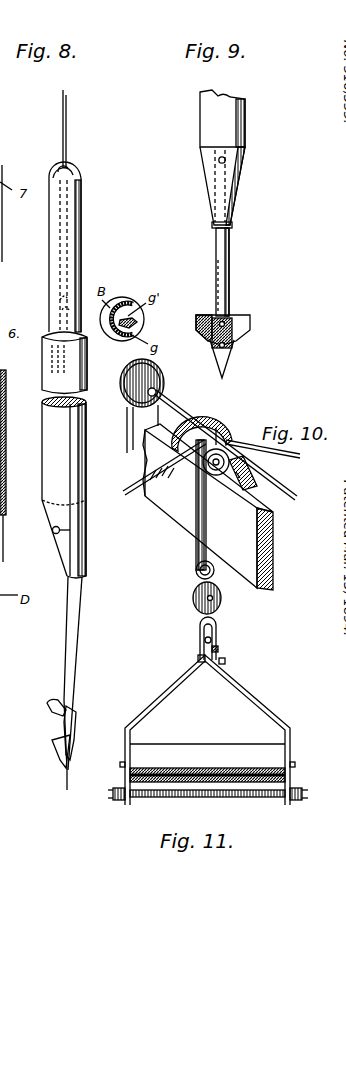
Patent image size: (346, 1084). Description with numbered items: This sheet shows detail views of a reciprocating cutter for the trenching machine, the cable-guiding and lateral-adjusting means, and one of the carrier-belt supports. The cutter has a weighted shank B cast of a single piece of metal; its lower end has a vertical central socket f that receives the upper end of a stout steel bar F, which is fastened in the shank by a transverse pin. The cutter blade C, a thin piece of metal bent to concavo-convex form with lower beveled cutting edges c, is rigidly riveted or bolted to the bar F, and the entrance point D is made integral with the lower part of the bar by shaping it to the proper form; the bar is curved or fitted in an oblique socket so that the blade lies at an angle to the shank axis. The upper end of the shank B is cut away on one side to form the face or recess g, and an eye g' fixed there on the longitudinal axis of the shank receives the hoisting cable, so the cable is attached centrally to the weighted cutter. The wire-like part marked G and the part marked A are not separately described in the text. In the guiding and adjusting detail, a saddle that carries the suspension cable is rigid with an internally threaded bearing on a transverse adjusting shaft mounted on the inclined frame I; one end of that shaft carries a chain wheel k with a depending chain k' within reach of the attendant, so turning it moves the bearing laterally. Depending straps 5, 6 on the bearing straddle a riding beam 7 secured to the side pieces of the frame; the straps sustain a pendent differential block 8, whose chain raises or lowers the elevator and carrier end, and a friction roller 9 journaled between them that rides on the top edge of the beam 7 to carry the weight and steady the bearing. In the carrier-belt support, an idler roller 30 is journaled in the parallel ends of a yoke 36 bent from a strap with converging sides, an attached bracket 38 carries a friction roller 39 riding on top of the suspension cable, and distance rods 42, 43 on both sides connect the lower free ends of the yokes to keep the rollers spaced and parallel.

In FIG. 8, the wire G is at (70, 136).
In FIG. 8, the face or recess g is at (86, 164).
In FIG. 8, the weighted shank B is at (59, 253).
In FIG. 9, the weighted shank B is at (210, 123).
In FIG. 8, the eye g' is at (45, 305).
In FIG. 8, the cutter blade C is at (56, 712).
In FIG. 9, the cutter blade C is at (195, 321).
In FIG. 10, the cutting edges c is at (169, 488).
In FIG. 8, the entrance point D is at (62, 748).
In FIG. 9, the entrance point D is at (230, 357).
In FIG. 9, the socket f is at (219, 162).
In FIG. 9, the steel bar F is at (214, 260).
In FIG. 9, the handle A is at (234, 286).
In FIG. 10, the handle A is at (127, 408).
In FIG. 10, the inclined frame I is at (222, 430).
In FIG. 10, the chain wheel k is at (200, 445).
In FIG. 10, the depending chain k' is at (152, 467).
In FIG. 10, the depending strap 5 is at (200, 535).
In FIG. 10, the depending strap 6 is at (218, 566).
In FIG. 10, the riding beam 7 is at (250, 549).
In FIG. 10, the differential sheave or block 8 is at (206, 597).
In FIG. 10, the friction roller 9 is at (246, 483).
In FIG. 11, the idler roller 30 is at (200, 750).
In FIG. 11, the yoke 36 is at (178, 679).
In FIG. 11, the bracket 38 is at (220, 623).
In FIG. 11, the friction roller 39 is at (205, 639).
In FIG. 11, the distance rod 42 is at (123, 806).
In FIG. 11, the distance rod 43 is at (292, 806).